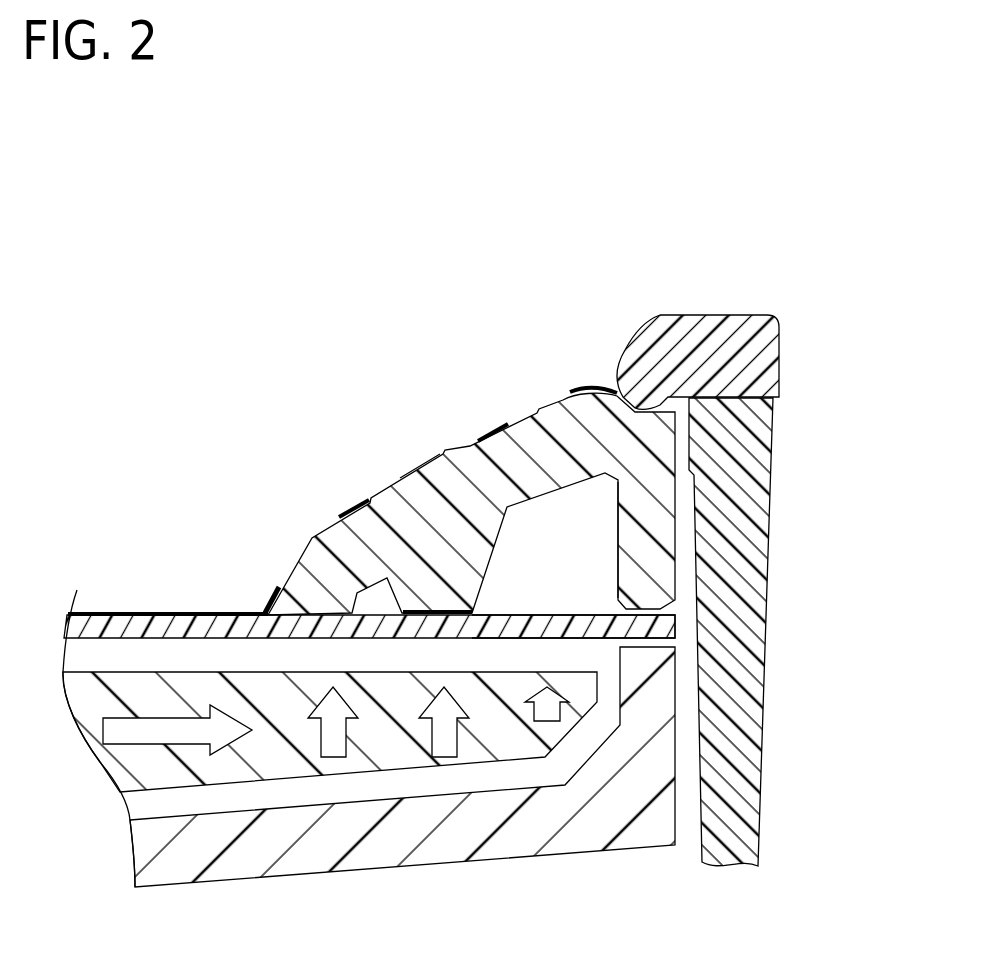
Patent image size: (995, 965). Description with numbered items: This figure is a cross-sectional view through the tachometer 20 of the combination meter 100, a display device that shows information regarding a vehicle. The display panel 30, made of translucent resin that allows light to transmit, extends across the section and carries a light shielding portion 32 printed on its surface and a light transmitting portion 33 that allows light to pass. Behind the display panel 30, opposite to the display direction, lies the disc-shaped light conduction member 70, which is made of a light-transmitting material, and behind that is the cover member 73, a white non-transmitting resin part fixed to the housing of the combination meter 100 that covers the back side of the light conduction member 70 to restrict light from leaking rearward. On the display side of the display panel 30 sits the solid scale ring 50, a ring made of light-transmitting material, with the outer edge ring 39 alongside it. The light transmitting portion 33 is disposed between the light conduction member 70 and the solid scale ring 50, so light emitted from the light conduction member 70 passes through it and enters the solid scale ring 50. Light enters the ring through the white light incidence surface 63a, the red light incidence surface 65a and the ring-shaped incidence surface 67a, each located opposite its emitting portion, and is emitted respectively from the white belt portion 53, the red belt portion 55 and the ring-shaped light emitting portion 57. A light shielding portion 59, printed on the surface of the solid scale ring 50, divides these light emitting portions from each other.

The combination meter 100 is at (716, 282).
The tachometer 20 is at (203, 520).
The display panel 30 is at (102, 615).
The light shielding portion 32 is at (158, 615).
The light transmitting portion 33 is at (597, 625).
The outer edge ring 39 is at (752, 349).
The solid scale ring 50 is at (650, 497).
The white belt portion 53 is at (313, 537).
The red belt portion 55 is at (409, 484).
The ring-shaped light emitting portion 57 is at (548, 408).
The light shielding portion 59 is at (585, 388).
The white light incidence surface 63a is at (314, 540).
The red light incidence surface 65a is at (426, 614).
The ring-shaped incidence surface 67a is at (643, 538).
The light conduction member 70 is at (543, 732).
The cover member 73 is at (630, 814).